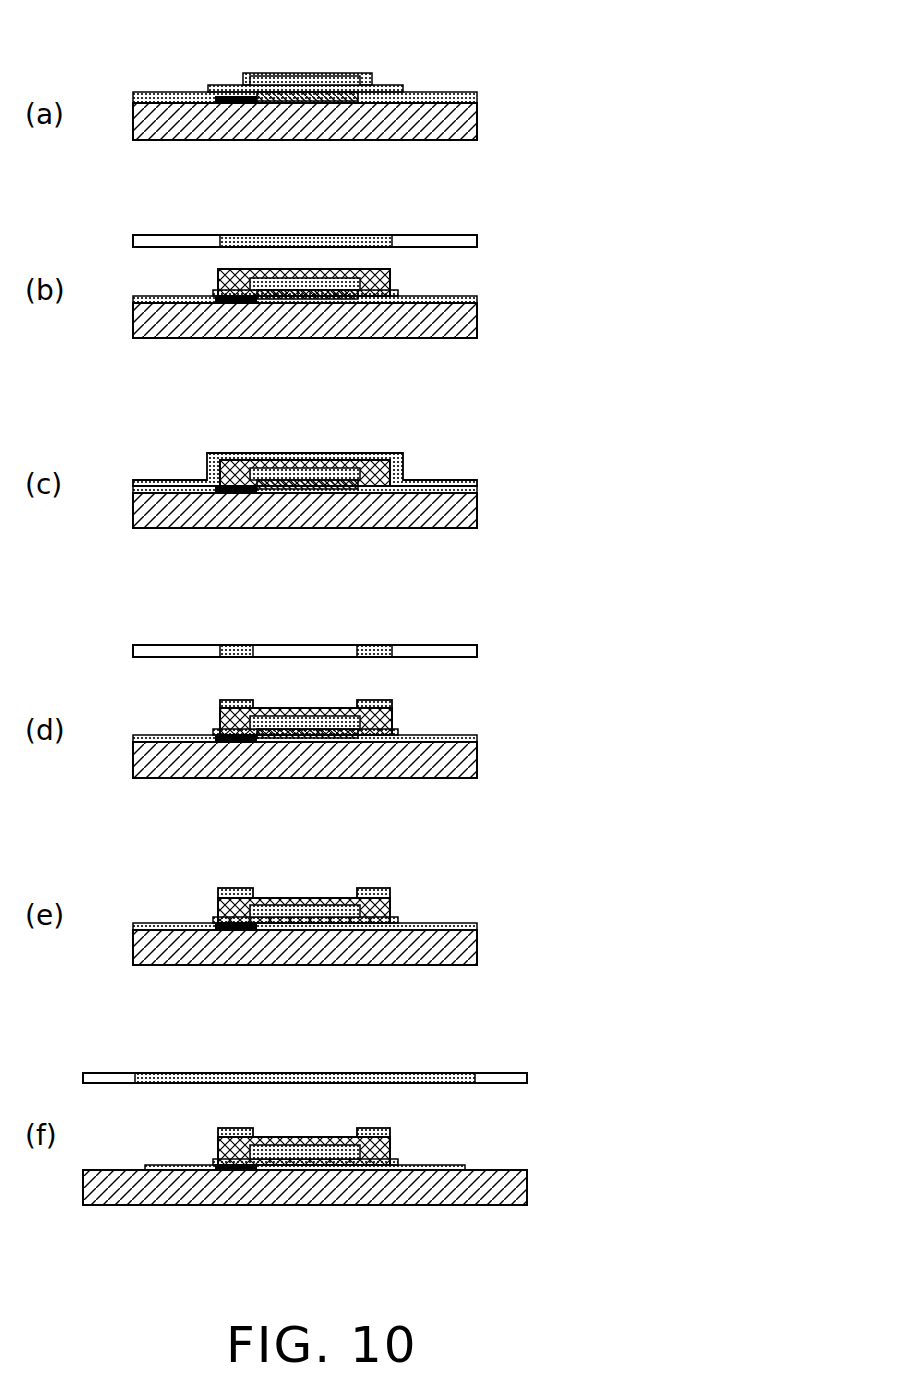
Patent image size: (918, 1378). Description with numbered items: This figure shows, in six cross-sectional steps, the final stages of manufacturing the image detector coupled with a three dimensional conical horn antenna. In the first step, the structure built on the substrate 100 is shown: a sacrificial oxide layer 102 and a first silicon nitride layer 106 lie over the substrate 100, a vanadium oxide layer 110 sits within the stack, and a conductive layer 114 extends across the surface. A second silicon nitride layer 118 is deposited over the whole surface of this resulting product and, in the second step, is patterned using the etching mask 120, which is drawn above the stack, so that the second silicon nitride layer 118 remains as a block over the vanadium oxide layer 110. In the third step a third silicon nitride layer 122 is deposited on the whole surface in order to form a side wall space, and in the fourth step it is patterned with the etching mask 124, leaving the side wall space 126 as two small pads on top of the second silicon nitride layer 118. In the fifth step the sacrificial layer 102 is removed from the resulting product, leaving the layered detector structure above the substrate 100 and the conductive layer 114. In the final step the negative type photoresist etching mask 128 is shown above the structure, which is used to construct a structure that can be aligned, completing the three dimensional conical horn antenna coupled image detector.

The substrate 100 is at (477, 122).
The sacrificial oxide layer 102 is at (350, 138).
The first silicon nitride layer 106 is at (237, 138).
The vanadium oxide layer 110 is at (307, 73).
The conductive layer 114 is at (480, 103).
The second silicon nitride layer 118 is at (438, 97).
The etching mask 120 is at (477, 241).
The third silicon nitride layer 122 is at (207, 462).
The etching mask 124 is at (477, 651).
The side wall space 126 is at (218, 700).
The etching mask 128 is at (527, 1078).